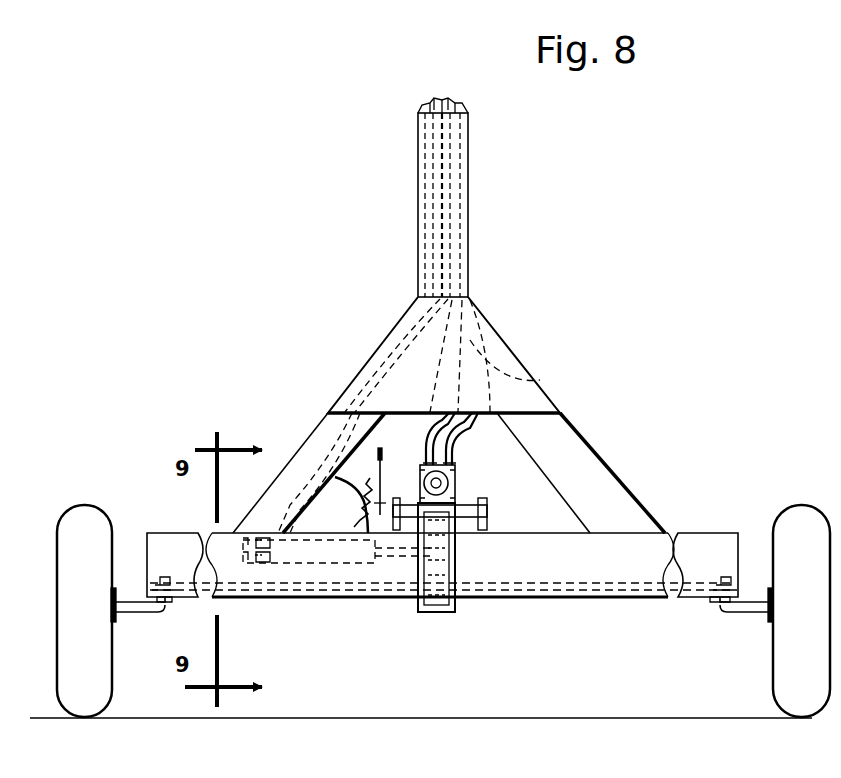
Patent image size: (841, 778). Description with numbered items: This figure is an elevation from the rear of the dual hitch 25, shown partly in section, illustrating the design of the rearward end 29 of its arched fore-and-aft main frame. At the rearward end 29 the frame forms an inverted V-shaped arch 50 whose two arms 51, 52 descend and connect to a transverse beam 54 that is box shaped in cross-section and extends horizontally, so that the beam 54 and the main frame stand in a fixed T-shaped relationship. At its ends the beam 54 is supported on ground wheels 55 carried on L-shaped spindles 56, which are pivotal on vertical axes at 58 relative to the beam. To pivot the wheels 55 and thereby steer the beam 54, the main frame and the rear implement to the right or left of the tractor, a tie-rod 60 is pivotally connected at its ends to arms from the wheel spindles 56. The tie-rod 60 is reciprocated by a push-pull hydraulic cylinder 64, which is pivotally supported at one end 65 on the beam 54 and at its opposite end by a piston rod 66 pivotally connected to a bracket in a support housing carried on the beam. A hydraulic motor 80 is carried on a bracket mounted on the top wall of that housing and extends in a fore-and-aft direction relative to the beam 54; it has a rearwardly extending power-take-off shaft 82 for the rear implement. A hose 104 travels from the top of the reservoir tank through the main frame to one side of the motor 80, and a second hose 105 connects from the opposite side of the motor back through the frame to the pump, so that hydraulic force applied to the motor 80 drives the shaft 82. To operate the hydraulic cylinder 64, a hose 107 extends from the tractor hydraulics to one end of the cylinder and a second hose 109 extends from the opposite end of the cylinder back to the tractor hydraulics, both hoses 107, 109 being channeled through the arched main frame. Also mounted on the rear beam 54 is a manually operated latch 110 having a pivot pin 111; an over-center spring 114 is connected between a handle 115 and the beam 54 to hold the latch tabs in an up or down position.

The dual hitch 25 is at (433, 197).
The rearward end 29 is at (462, 210).
The inverted V-shaped arch 50 is at (446, 374).
The arm 51 is at (592, 468).
The arm 52 is at (292, 462).
The transverse beam 54 is at (518, 548).
The ground wheels 55 is at (85, 510).
The L-shaped spindles 56 is at (140, 615).
The vertical pivot axes 58 is at (162, 572).
The tie-rod 60 is at (563, 584).
The push-pull hydraulic cylinder 64 is at (350, 598).
The cylinder end 65 is at (272, 600).
The piston rod 66 is at (412, 598).
The hydraulic motor 80 is at (462, 458).
The power-take-off shaft 82 is at (458, 481).
The hose 104 is at (488, 327).
The second hose 105 is at (540, 380).
The hose 107 is at (388, 385).
The second hose 109 is at (320, 442).
The manually operated latch 110 is at (468, 530).
The pivot pin 111 is at (490, 510).
The over-center spring 114 is at (356, 520).
The handle 115 is at (382, 465).